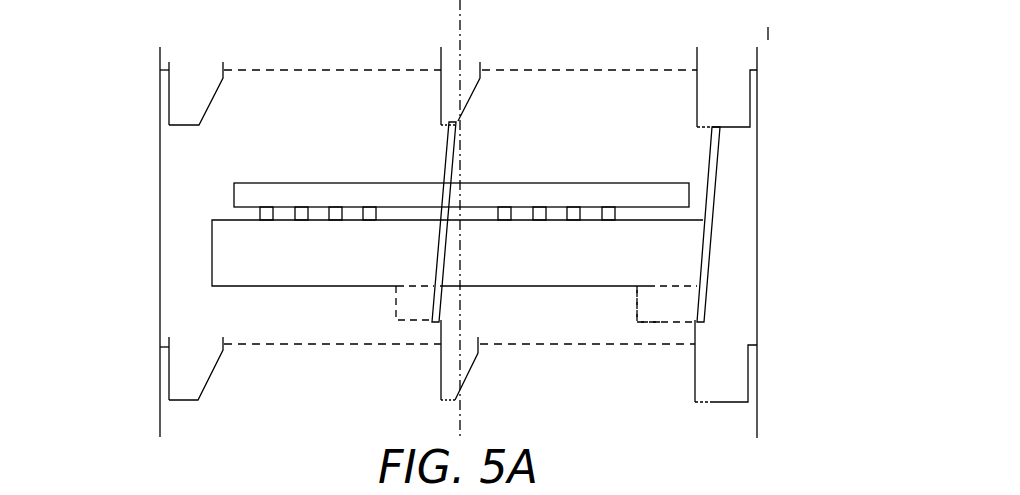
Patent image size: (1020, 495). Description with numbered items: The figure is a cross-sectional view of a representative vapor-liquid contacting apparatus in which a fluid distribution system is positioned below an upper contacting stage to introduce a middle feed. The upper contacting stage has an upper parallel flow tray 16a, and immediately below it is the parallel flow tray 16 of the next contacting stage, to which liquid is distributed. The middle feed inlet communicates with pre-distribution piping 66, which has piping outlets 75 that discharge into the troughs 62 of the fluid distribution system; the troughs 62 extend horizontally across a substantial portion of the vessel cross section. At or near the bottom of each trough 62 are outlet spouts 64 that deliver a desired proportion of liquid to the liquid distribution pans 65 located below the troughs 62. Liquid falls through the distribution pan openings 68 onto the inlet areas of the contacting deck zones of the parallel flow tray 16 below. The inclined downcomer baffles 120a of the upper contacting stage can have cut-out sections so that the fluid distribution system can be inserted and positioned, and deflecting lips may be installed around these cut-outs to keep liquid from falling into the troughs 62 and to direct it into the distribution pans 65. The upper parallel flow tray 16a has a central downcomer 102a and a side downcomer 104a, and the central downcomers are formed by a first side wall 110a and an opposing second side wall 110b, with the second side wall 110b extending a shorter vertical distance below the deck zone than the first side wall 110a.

The parallel flow tray 16 is at (122, 382).
The upper parallel flow tray 16a is at (124, 105).
The trough 62 is at (280, 287).
The outlet spout 64 is at (417, 286).
The liquid distribution pan 65 is at (637, 298).
The pre-distribution piping 66 is at (660, 194).
The distribution pan opening 68 is at (663, 323).
The piping outlet 75 is at (337, 208).
The central downcomer 102a is at (461, 16).
The side downcomer 104a is at (718, 62).
The first side wall 110a is at (440, 376).
The second side wall 110b is at (478, 347).
The inclined downcomer baffle 120a is at (451, 247).